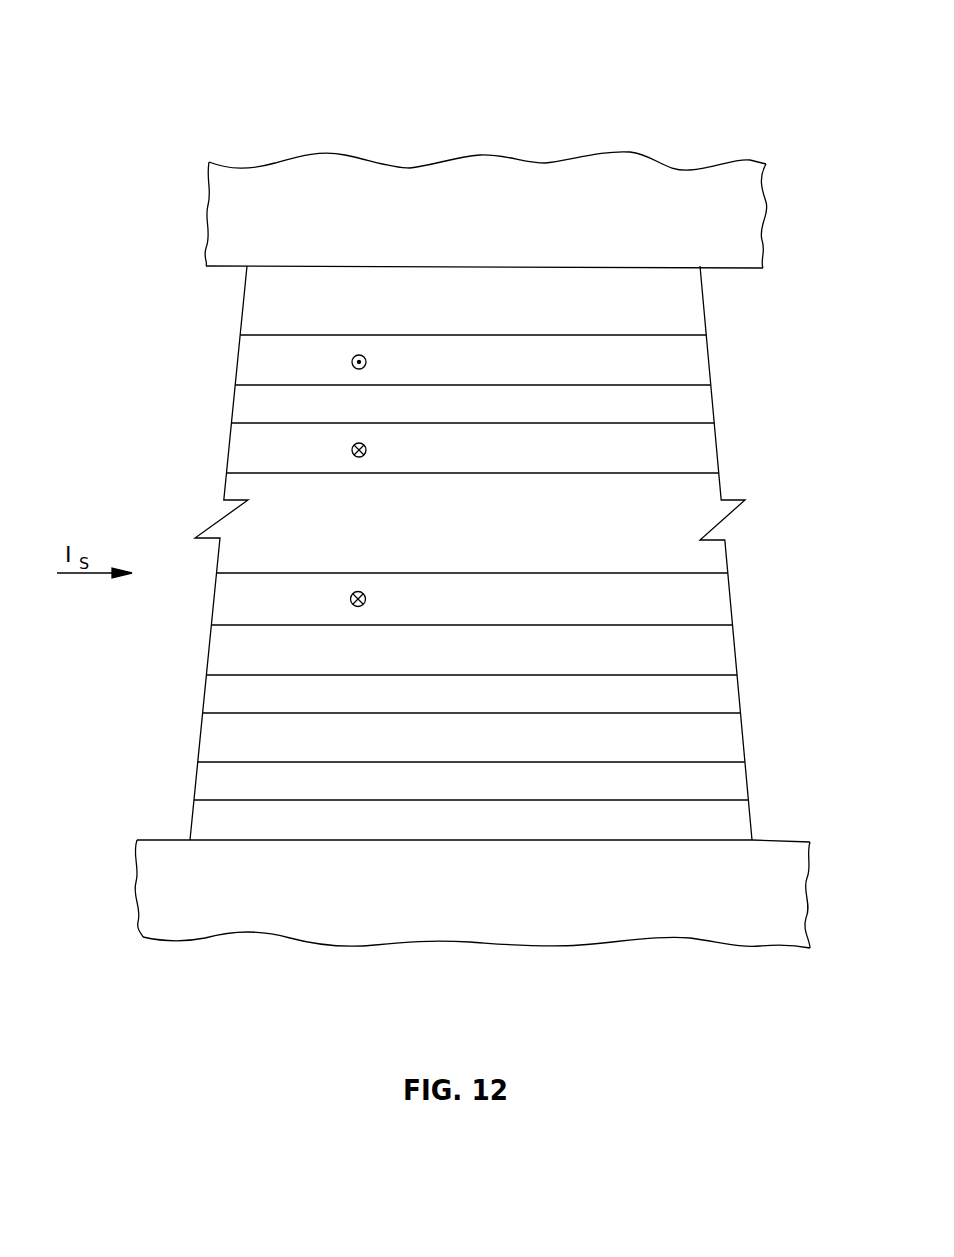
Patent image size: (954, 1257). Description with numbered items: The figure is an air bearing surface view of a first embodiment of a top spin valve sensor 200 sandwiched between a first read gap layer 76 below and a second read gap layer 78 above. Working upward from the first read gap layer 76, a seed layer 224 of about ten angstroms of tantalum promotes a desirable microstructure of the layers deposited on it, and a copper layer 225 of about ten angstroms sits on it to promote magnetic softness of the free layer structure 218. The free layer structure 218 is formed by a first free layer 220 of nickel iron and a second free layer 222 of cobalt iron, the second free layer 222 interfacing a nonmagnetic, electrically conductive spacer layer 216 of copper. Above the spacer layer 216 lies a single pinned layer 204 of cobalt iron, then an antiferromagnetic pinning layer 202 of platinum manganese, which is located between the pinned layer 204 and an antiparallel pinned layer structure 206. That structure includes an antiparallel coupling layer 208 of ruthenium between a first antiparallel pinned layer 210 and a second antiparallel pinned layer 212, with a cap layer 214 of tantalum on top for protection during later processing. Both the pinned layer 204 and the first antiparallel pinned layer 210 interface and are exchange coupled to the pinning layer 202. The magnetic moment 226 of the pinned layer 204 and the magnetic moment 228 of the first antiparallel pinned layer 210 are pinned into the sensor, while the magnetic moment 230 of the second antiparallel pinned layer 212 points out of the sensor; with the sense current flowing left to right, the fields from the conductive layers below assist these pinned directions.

The spin valve sensor 200 is at (3, 836).
The antiparallel pinned layer structure 206 is at (116, 471).
The free layer structure 218 is at (195, 674).
The second read gap layer 78 is at (752, 190).
The first read gap layer 76 is at (760, 937).
The cap layer 214 is at (705, 303).
The second antiparallel pinned layer 212 is at (711, 363).
The antiparallel coupling layer 208 is at (715, 402).
The first antiparallel pinned layer 210 is at (718, 445).
The antiferromagnetic pinning layer 202 is at (728, 557).
The single pinned layer 204 is at (730, 602).
The spacer layer 216 is at (735, 655).
The second free layer 222 is at (740, 698).
The first free layer 220 is at (743, 740).
The copper layer 225 is at (747, 783).
The seed layer 224 is at (750, 824).
The magnetic moment of second AP pinned layer 230 is at (351, 363).
The magnetic moment of first AP pinned layer 228 is at (351, 451).
The magnetic moment of single pinned layer 226 is at (350, 599).